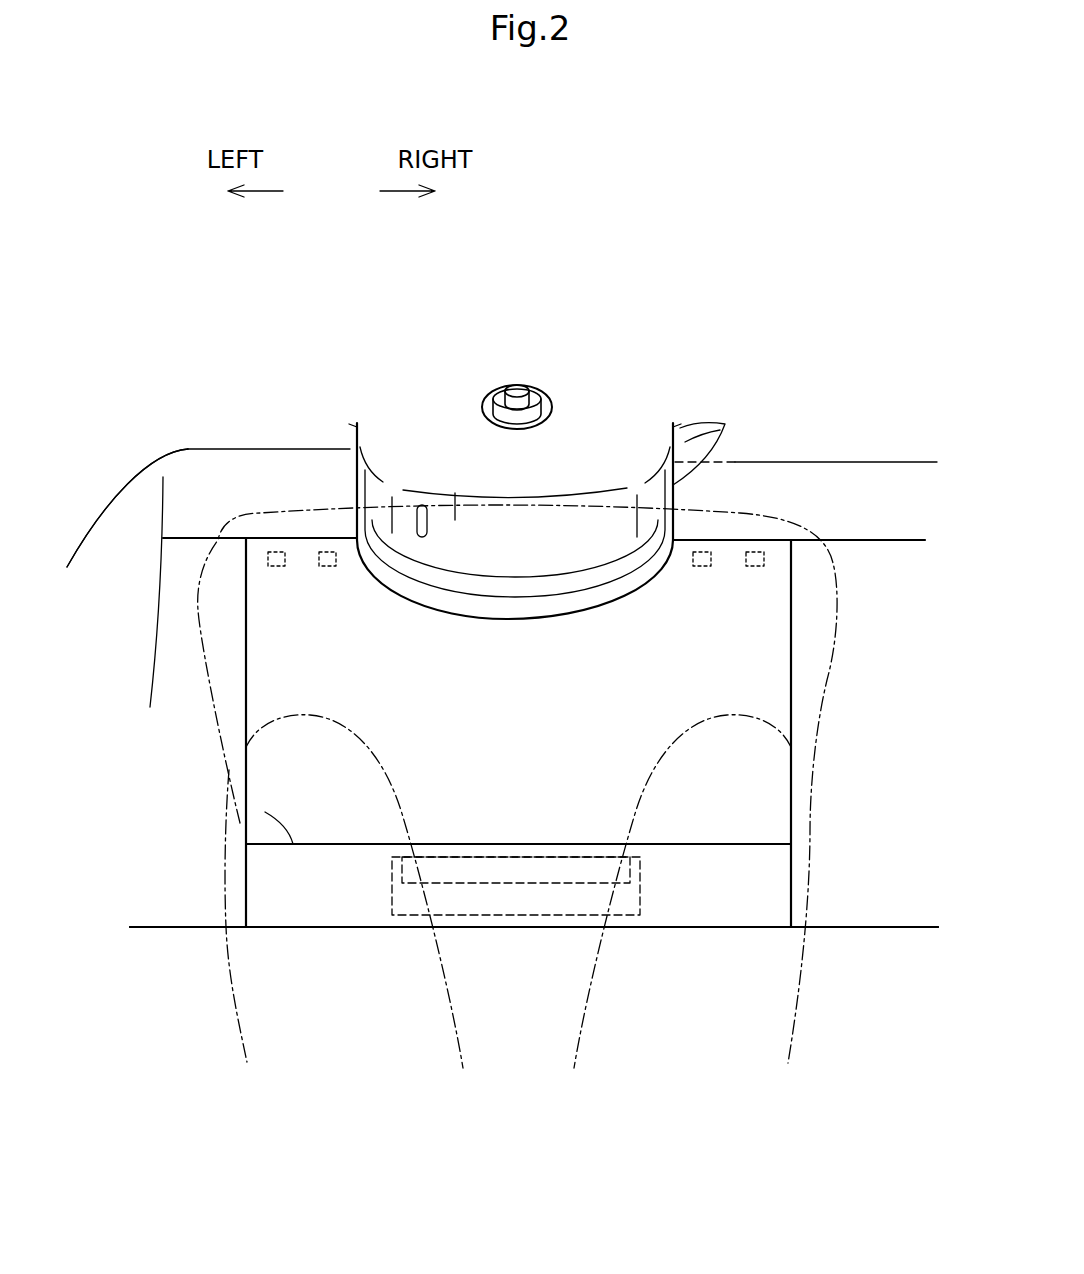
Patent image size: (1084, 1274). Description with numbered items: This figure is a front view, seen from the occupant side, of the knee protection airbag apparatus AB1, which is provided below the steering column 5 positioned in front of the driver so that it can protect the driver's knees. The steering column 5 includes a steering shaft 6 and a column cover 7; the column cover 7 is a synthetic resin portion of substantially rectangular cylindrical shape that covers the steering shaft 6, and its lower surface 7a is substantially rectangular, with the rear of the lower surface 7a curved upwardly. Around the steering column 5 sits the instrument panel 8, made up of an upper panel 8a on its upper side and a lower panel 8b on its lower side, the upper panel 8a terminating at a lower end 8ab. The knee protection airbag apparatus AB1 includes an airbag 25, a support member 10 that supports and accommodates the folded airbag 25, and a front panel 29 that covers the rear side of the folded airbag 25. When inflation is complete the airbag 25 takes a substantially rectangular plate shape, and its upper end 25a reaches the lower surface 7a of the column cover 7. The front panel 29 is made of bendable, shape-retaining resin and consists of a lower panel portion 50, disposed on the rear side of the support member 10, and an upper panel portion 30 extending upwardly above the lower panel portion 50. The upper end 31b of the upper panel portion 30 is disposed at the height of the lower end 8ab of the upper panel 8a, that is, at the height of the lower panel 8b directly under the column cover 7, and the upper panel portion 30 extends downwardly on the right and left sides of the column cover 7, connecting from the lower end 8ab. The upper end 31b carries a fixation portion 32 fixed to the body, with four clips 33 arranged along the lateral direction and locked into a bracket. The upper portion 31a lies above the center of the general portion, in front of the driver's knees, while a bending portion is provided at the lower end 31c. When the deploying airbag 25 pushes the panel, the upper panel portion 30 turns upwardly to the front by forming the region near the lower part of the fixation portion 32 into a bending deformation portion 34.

The steering column 5 is at (510, 268).
The steering shaft 6 is at (514, 385).
The column cover 7 is at (620, 423).
The lower surface 7a is at (455, 520).
The instrument panel 8 is at (218, 345).
The upper panel 8a is at (200, 478).
The lower panel 8b is at (180, 580).
The lower end 8ab is at (740, 540).
The support member 10 is at (487, 905).
The airbag 25 is at (807, 702).
The upper end 25a is at (700, 518).
The front panel 29 is at (930, 1042).
The upper panel portion 30 is at (759, 805).
The upper portion 31a is at (777, 663).
The upper end 31b is at (307, 547).
The lower end 31c is at (265, 812).
The fixation portion 32 is at (778, 562).
The clip 33 is at (277, 567).
The bending deformation portion 34 is at (273, 635).
The lower panel portion 50 is at (780, 903).
The knee protection airbag apparatus AB1 is at (348, 962).